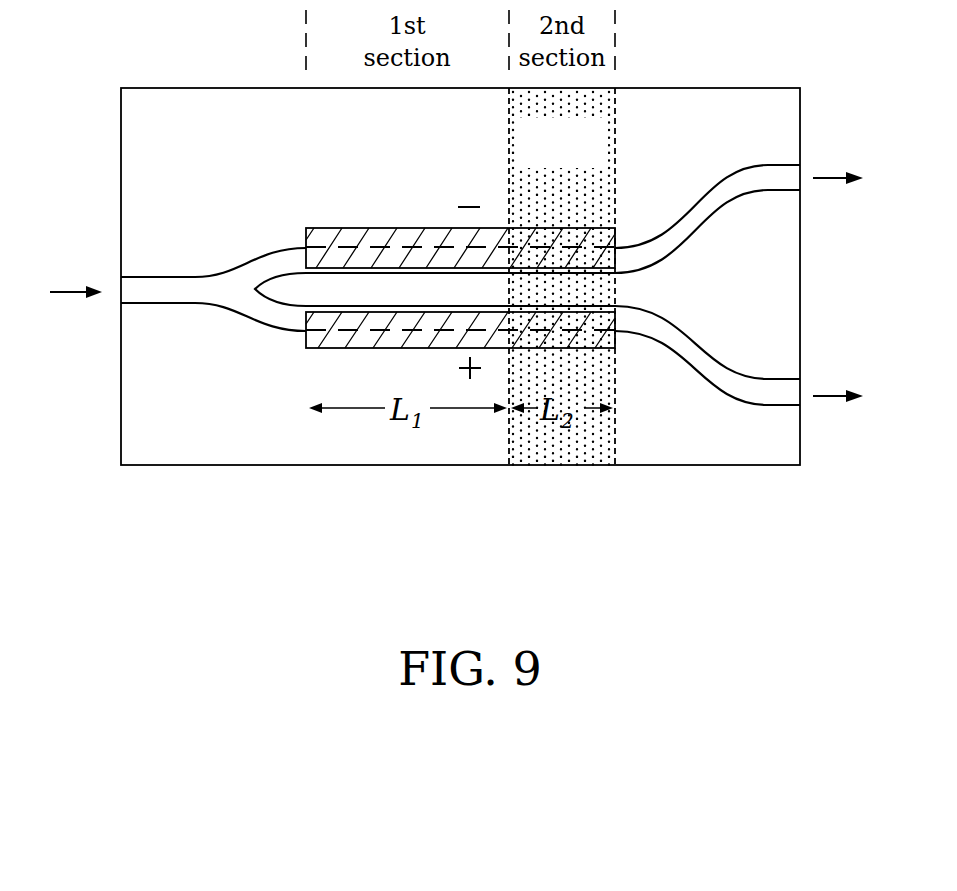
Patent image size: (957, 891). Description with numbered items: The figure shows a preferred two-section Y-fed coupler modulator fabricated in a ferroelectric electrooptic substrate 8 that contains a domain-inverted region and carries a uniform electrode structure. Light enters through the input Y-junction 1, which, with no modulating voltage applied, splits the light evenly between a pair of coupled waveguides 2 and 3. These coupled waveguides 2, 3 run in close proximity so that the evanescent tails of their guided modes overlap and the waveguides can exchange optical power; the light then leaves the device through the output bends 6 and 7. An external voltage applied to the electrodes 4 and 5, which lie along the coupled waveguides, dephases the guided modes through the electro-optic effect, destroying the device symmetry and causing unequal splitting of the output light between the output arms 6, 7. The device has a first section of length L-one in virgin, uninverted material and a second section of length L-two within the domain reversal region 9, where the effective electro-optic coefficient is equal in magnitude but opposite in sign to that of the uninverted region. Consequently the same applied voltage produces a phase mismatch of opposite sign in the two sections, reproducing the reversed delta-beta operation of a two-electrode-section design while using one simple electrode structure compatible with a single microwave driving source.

The input Y-junction 1 is at (190, 304).
The coupled waveguide 2 is at (347, 253).
The coupled waveguide 3 is at (345, 349).
The electrode 4 is at (397, 228).
The electrode 5 is at (397, 349).
The output bend 6 is at (725, 218).
The output bend 7 is at (724, 352).
The electrooptic substrate 8 is at (121, 158).
The domain reversal region 9 is at (555, 466).